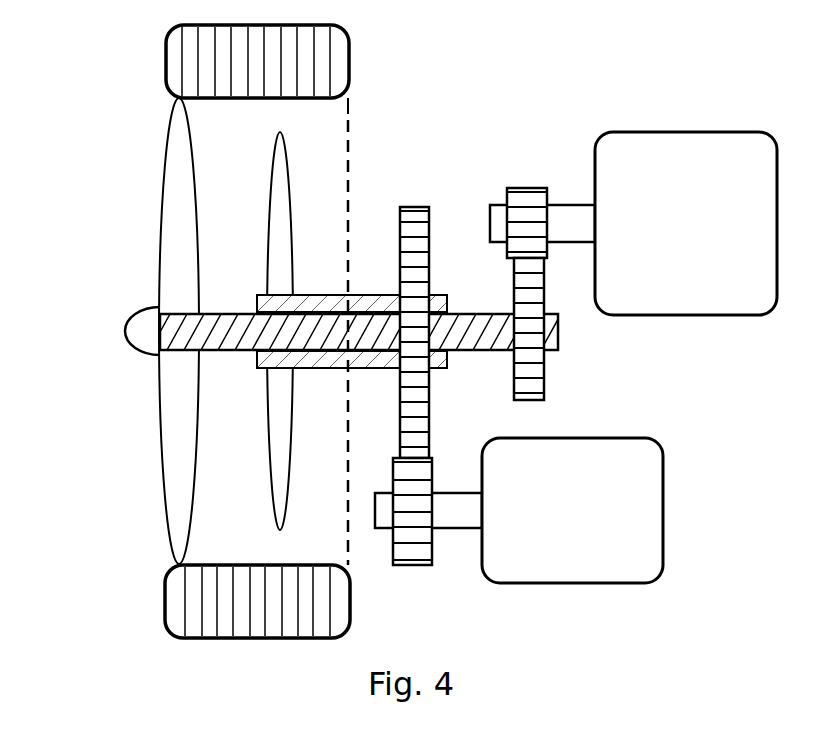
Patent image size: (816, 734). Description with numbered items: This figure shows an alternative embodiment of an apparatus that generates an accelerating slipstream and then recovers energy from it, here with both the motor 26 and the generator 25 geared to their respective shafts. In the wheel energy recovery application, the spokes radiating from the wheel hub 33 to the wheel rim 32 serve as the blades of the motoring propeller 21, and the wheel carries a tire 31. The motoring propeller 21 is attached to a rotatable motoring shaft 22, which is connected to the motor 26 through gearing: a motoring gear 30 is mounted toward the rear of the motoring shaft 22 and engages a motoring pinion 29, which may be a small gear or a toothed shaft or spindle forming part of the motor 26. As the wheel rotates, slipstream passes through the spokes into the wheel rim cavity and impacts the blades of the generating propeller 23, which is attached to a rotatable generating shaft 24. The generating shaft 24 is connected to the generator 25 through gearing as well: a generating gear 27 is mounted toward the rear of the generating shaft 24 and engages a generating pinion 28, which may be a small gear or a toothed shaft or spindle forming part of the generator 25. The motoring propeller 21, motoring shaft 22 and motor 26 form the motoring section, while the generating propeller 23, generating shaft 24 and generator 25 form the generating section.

The motoring propeller 21 is at (178, 260).
The motoring shaft 22 is at (230, 330).
The generating propeller 23 is at (280, 170).
The generating shaft 24 is at (320, 300).
The generator 25 is at (626, 512).
The motor 26 is at (684, 150).
The generating gear 27 is at (414, 220).
The generating pinion 28 is at (410, 567).
The motoring pinion 29 is at (527, 200).
The motoring gear 30 is at (530, 380).
The tire 31 is at (260, 600).
The wheel rim 32 is at (348, 113).
The wheel hub 33 is at (125, 330).